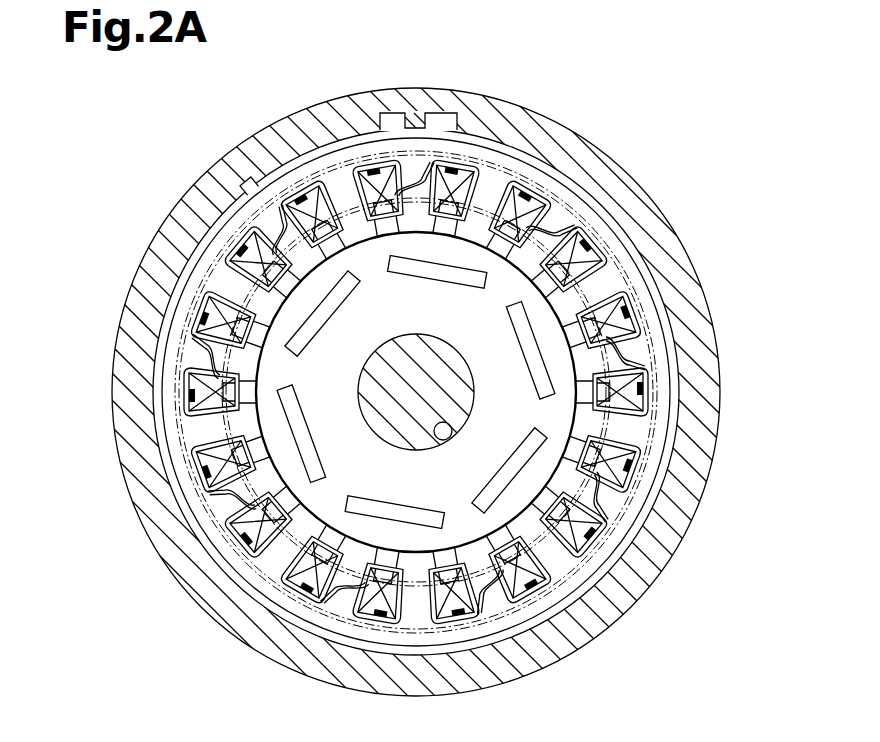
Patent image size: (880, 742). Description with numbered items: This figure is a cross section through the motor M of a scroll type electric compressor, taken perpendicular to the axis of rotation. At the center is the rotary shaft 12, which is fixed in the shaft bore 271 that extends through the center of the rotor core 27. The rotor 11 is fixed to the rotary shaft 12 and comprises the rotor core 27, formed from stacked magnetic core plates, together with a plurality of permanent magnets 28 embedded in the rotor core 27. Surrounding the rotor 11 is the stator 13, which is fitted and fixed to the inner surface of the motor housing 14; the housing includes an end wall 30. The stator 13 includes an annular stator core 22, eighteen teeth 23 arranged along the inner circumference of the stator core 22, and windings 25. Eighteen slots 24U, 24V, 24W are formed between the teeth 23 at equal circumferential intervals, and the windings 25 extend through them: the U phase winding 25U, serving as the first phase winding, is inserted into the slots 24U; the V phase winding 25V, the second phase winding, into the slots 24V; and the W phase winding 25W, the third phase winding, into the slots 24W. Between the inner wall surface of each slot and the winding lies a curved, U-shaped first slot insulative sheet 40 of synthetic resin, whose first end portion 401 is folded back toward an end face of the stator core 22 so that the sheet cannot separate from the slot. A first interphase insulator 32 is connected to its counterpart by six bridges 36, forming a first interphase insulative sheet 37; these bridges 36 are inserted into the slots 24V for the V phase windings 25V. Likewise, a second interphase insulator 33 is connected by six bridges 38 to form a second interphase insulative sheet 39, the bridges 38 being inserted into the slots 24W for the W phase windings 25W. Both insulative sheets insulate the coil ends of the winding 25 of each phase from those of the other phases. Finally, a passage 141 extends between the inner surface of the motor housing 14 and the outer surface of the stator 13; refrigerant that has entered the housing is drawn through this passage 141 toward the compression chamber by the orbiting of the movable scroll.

The motor M is at (138, 131).
The rotor 11 is at (131, 487).
The rotary shaft 12 is at (378, 357).
The stator 13 is at (169, 251).
The motor housing 14 is at (440, 371).
The stator core 22 is at (208, 275).
The teeth 23 is at (412, 237).
The slot 24U is at (453, 173).
The slot 24V is at (323, 200).
The slot 24W is at (612, 262).
The windings 25 is at (191, 252).
The U phase winding 25U is at (253, 250).
The V phase winding 25V is at (652, 388).
The W phase winding 25W is at (412, 167).
The rotor core 27 is at (200, 447).
The permanent magnets 28 is at (233, 495).
The end wall 30 is at (440, 371).
The first interphase insulator 32 is at (472, 392).
The second interphase insulator 33 is at (416, 392).
The bridges 36 is at (512, 240).
The first interphase insulative sheet 37 is at (697, 327).
The bridges 38 is at (372, 153).
The second interphase insulative sheet 39 is at (512, 282).
The first slot insulative sheet 40 is at (607, 633).
The passage 141 is at (458, 126).
The shaft bore 271 is at (437, 437).
The first end portion 401 is at (440, 371).